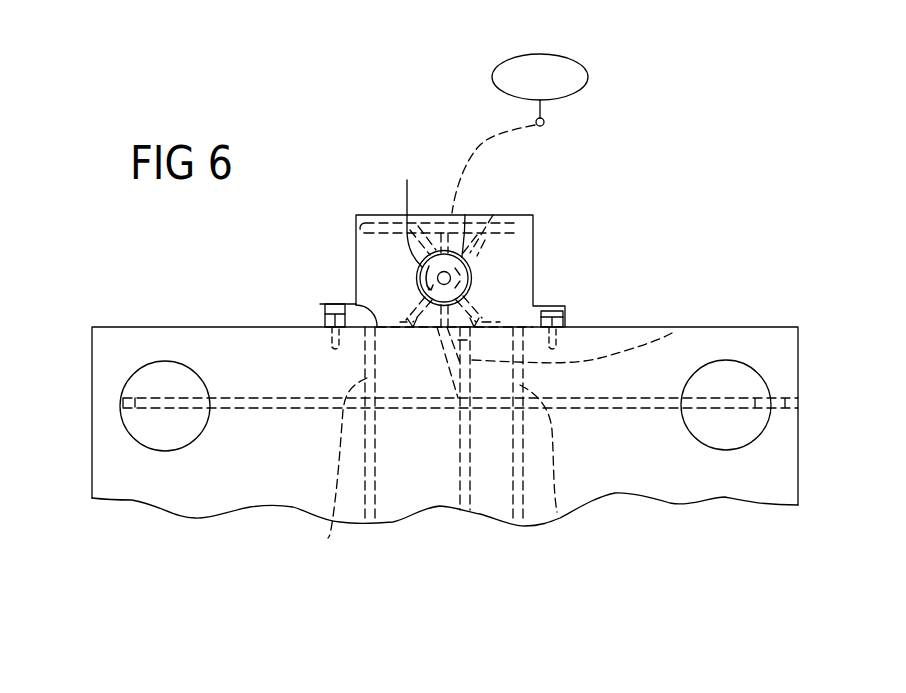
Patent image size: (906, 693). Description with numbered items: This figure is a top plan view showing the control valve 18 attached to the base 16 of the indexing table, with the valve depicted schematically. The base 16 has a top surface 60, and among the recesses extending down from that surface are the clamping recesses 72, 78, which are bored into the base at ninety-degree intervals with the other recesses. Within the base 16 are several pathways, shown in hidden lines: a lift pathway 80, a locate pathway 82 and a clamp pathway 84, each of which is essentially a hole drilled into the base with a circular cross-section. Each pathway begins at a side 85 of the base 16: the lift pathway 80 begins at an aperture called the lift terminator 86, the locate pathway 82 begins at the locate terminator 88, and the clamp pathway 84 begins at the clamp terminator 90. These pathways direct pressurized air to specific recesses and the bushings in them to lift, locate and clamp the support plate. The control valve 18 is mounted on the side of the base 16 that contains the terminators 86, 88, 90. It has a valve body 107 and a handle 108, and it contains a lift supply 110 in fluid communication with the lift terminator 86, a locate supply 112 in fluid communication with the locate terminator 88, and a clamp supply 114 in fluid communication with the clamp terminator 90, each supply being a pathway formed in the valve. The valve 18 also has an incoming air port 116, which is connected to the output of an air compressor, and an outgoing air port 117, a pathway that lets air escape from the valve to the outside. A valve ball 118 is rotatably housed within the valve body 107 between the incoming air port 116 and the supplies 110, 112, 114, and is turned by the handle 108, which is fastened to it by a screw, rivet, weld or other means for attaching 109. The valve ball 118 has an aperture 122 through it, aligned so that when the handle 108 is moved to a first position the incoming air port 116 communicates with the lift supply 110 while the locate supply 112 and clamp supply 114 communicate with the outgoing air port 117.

The base 16 is at (820, 463).
The control valve 18 is at (443, 192).
The top surface 60 is at (105, 467).
The clamping recess 72 is at (150, 376).
The clamping recess 78 is at (753, 387).
The lift pathway 80 is at (328, 538).
The locate pathway 82 is at (672, 333).
The clamp pathway 84 is at (555, 512).
The side 85 is at (673, 327).
The lift terminator 86 is at (320, 304).
The locate terminator 88 is at (417, 324).
The clamp terminator 90 is at (565, 312).
The valve body 107 is at (393, 215).
The handle 108 is at (588, 77).
The means for attaching 109 is at (544, 121).
The lift supply 110 is at (420, 306).
The locate supply 112 is at (477, 320).
The clamp supply 114 is at (470, 318).
The incoming air port 116 is at (520, 213).
The outgoing air port 117 is at (407, 180).
The valve ball 118 is at (465, 215).
The aperture 122 is at (493, 215).